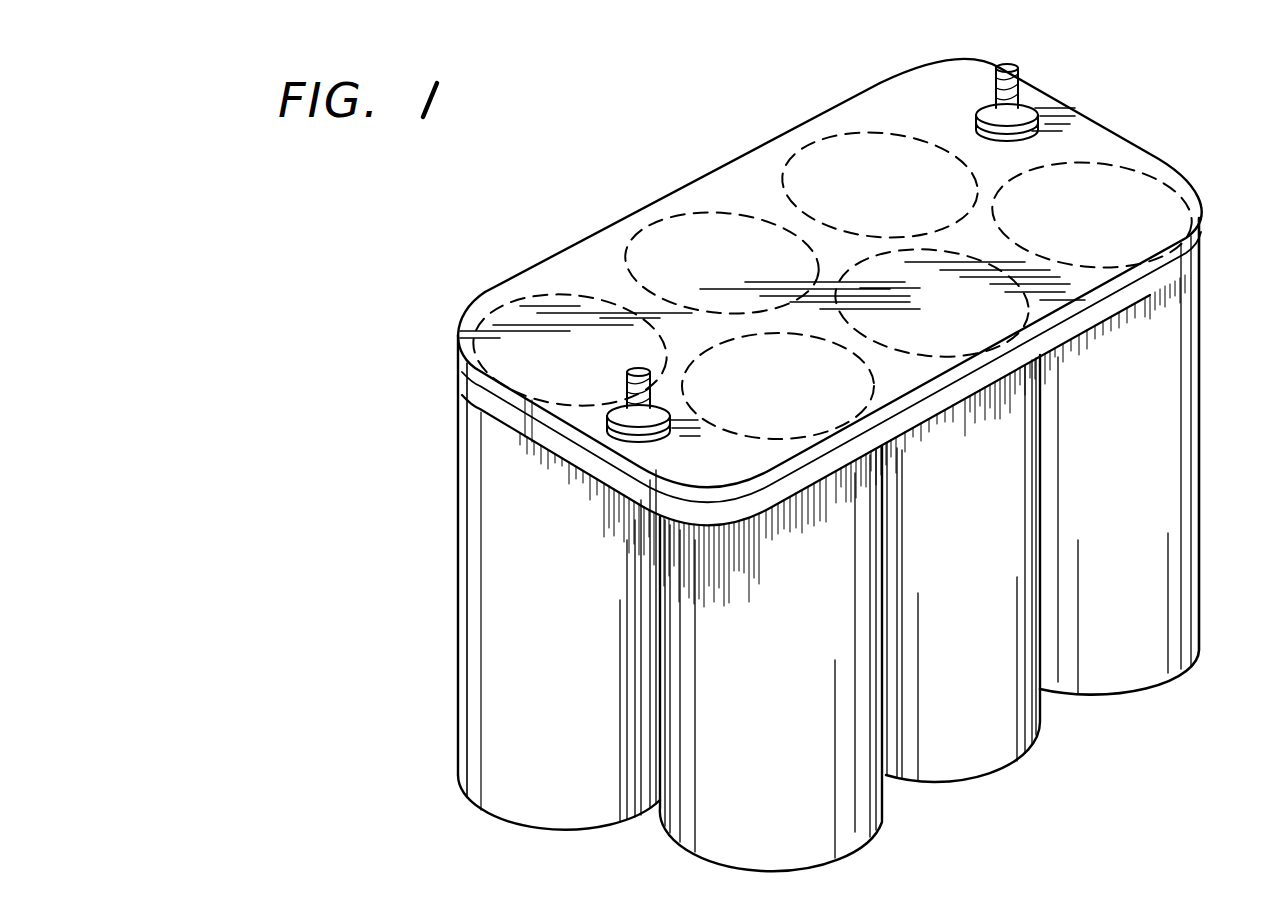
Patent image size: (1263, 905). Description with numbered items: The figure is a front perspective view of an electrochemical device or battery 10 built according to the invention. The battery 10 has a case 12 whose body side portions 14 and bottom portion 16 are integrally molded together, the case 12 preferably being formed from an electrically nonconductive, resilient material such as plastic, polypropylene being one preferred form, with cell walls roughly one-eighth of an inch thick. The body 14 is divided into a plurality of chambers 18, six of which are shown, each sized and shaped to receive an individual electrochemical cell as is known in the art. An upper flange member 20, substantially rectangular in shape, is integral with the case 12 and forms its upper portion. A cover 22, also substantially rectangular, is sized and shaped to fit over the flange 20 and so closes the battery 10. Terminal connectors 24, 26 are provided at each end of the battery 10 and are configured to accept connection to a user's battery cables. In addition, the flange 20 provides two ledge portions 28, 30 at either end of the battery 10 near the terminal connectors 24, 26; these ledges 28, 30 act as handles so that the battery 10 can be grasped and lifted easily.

The battery 10 is at (596, 176).
The case 12 is at (506, 624).
The body side portions 14 is at (538, 742).
The bottom portion 16 is at (1108, 694).
The chambers 18 is at (704, 213).
The upper flange member 20 is at (575, 462).
The cover 22 is at (1124, 162).
The terminal connector 24 is at (608, 380).
The terminal connector 26 is at (1021, 60).
The ledge portion 28 is at (748, 514).
The ledge portion 30 is at (964, 46).